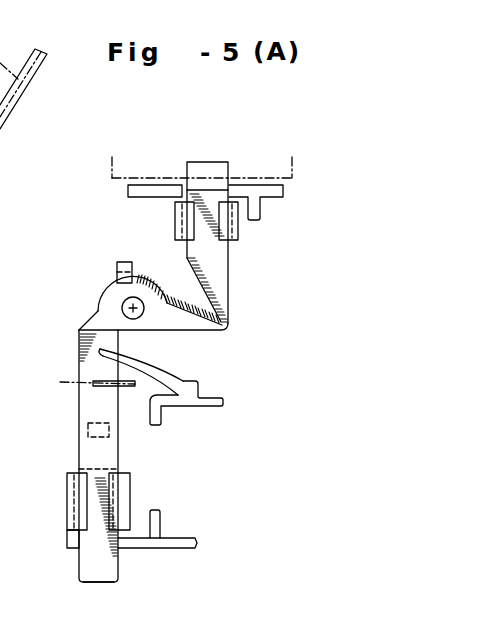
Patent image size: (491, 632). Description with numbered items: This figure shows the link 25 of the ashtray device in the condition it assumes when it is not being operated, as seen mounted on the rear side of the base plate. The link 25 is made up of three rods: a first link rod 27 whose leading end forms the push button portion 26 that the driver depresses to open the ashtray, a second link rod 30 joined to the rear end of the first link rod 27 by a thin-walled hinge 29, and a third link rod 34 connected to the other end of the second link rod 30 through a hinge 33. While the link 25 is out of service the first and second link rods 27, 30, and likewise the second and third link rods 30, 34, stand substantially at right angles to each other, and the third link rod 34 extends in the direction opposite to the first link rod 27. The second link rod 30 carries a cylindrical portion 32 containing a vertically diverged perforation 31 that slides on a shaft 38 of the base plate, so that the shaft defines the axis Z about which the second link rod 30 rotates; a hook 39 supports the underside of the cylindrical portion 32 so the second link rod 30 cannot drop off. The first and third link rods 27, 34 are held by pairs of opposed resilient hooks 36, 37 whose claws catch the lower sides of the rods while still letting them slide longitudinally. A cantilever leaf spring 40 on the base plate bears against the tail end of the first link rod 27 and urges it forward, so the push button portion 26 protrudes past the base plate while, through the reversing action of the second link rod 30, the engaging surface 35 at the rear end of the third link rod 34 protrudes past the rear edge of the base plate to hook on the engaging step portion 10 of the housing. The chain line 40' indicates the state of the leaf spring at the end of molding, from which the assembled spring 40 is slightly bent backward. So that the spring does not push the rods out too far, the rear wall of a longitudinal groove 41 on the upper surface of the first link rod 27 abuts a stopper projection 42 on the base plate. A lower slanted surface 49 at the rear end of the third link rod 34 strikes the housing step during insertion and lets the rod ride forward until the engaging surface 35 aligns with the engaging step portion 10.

The engaging step portion 10 is at (172, 181).
The link 25 is at (122, 448).
The push button portion 26 is at (97, 584).
The first link rod 27 is at (98, 549).
The thin-walled hinge 29 is at (78, 329).
The second link rod 30 is at (190, 334).
The perforation 31 is at (124, 296).
The cylindrical portion 32 is at (141, 281).
The hinge 33 is at (227, 323).
The third link rod 34 is at (231, 268).
The engaging surface 35 is at (228, 161).
The hook 36 is at (82, 499).
The hook 37 is at (176, 212).
The shaft 38 is at (122, 309).
The hook 39 is at (122, 262).
The cantilever leaf spring 40 is at (141, 364).
The molded state of leaf spring 40' is at (74, 381).
The longitudinal groove 41 is at (88, 430).
The stopper projection 42 is at (103, 436).
The lower slanted surface 49 is at (202, 165).
The axis Z is at (140, 302).